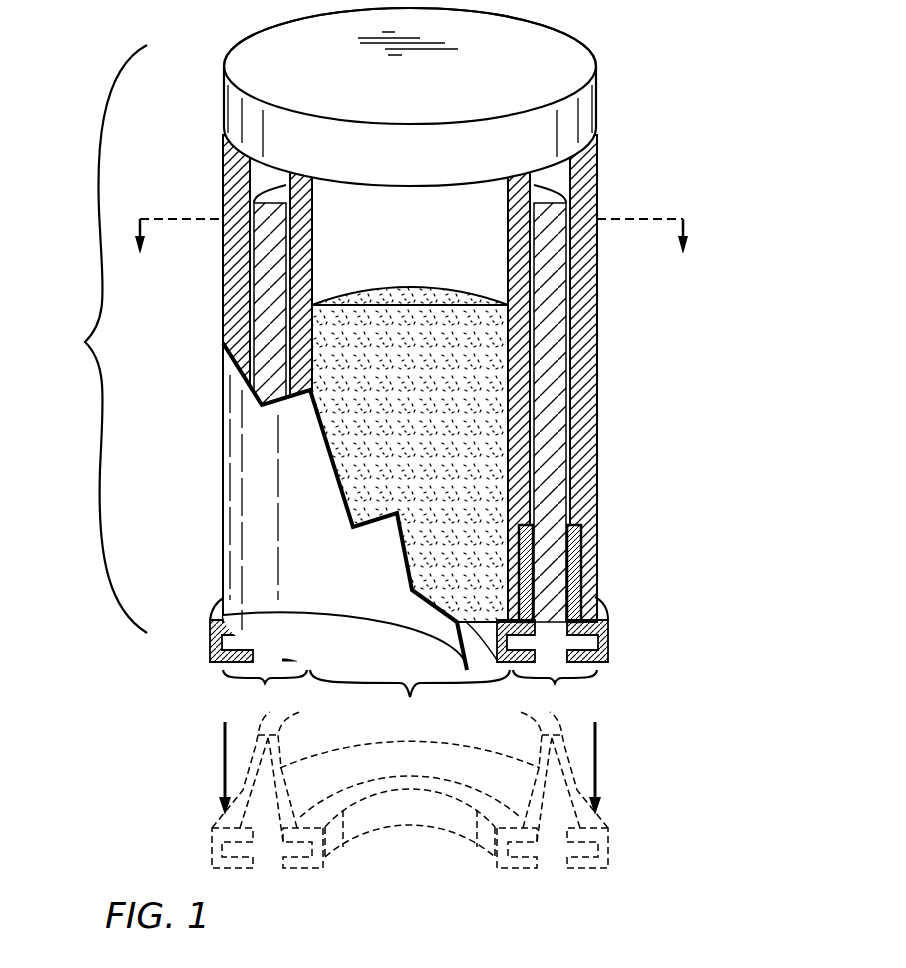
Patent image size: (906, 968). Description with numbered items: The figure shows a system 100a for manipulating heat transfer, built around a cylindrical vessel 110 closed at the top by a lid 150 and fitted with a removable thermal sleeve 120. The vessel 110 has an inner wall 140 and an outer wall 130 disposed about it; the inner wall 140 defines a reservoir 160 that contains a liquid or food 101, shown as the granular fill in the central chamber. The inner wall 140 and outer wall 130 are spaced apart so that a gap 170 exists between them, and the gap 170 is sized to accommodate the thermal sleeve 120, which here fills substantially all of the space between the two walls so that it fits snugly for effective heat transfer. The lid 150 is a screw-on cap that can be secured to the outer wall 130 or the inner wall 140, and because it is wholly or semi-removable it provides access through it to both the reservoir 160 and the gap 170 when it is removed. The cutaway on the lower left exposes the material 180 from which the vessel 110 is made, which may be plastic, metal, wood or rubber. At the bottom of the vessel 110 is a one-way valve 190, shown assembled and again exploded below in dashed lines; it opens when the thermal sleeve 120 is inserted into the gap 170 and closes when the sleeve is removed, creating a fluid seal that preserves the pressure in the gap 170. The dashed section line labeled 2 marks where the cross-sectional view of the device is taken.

The system 100a is at (413, 445).
The liquid 101 is at (393, 413).
The vessel 110 is at (97, 339).
The thermal sleeve 120 is at (552, 318).
The outer wall 130 is at (597, 395).
The inner wall 140 is at (312, 232).
The lid 150 is at (393, 96).
The reservoir 160 is at (410, 763).
The gap 170 is at (410, 689).
The material 180 is at (252, 500).
The one-way valve 190 is at (593, 662).
The section line of FIG. 2 is at (410, 251).